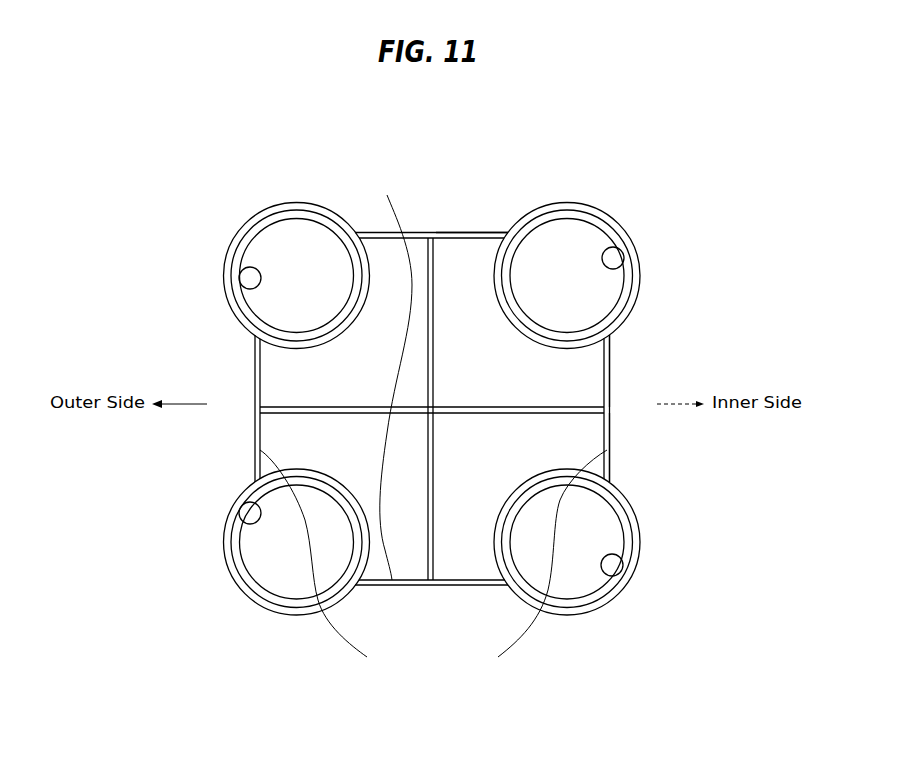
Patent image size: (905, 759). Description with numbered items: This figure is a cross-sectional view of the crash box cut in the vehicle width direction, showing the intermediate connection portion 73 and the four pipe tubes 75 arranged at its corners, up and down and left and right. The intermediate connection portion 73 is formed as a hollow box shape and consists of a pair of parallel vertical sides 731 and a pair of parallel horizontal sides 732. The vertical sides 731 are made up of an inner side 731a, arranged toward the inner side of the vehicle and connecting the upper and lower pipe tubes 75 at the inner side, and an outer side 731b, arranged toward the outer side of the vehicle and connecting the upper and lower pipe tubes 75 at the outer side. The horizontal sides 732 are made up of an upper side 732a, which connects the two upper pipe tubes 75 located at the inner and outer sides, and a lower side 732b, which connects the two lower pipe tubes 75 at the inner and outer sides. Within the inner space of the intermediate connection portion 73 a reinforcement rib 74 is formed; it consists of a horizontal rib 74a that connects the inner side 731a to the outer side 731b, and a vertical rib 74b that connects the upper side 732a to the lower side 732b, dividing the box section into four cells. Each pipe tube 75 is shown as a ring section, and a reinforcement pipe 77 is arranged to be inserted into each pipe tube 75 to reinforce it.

The intermediate connection portion 73 is at (362, 228).
The vertical sides 731 is at (478, 680).
The inner side 731a is at (532, 565).
The outer side 731b is at (341, 565).
The horizontal sides 732 is at (472, 170).
The upper side 732a is at (463, 232).
The lower side 732b is at (393, 375).
The reinforcement rib 74 is at (707, 322).
The horizontal rib 74a is at (513, 407).
The vertical rib 74b is at (437, 315).
The pipe tube 75 is at (270, 207).
The reinforcement pipe 77 is at (232, 298).